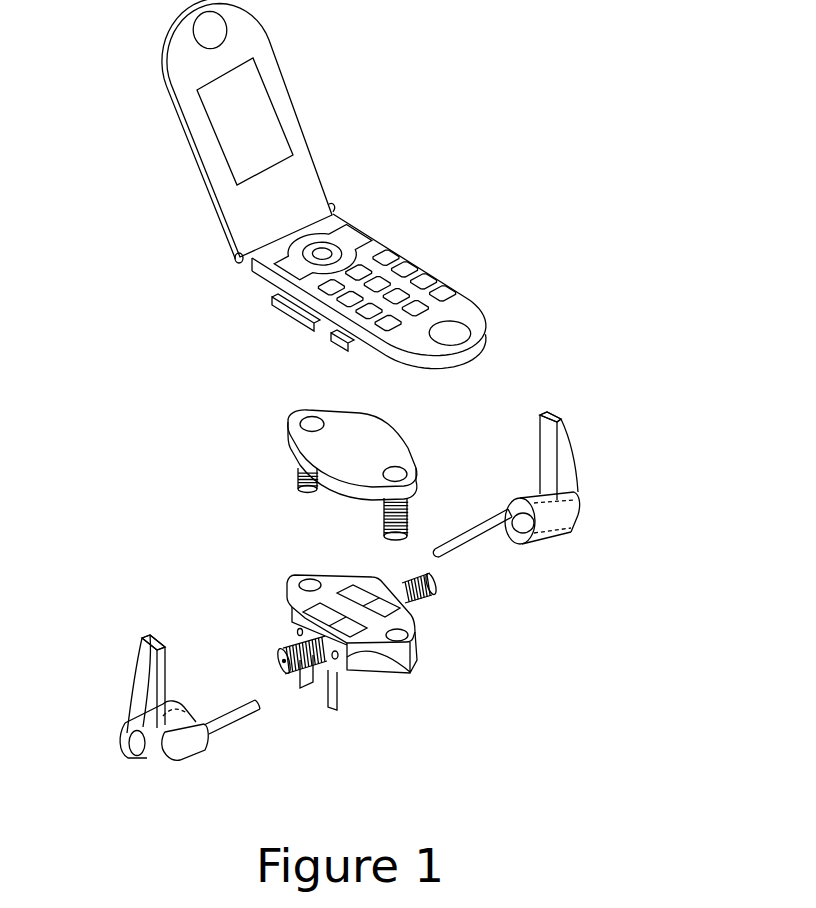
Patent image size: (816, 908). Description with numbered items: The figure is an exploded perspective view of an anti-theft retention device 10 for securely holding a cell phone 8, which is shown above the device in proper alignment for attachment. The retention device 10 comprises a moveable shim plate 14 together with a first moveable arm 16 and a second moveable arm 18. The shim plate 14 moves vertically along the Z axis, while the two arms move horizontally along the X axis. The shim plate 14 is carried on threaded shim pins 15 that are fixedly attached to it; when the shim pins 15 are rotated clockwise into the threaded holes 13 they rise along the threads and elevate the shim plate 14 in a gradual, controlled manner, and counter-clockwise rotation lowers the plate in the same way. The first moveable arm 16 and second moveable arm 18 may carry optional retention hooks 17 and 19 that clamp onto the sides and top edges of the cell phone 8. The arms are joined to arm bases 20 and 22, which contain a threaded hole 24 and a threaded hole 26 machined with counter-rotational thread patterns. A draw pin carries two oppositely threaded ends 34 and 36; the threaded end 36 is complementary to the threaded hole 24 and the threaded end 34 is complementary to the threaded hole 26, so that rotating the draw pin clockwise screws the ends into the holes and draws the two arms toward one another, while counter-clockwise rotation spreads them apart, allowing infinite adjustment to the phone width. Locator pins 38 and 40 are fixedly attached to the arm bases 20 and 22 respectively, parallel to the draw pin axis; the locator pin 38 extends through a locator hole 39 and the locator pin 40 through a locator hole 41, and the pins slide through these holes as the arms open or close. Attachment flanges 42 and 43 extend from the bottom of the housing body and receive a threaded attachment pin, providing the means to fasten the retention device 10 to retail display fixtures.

The cell phone 8 is at (197, 120).
The retention device 10 is at (552, 673).
The threaded holes 13 is at (309, 583).
The shim plate 14 is at (333, 420).
The shim pins 15 is at (300, 490).
The first moveable arm 16 is at (138, 695).
The retention hook 17 is at (165, 640).
The second moveable arm 18 is at (570, 453).
The retention hook 19 is at (543, 426).
The arm base 20 is at (133, 757).
The arm base 22 is at (560, 537).
The threaded hole 24 is at (160, 755).
The threaded hole 26 is at (578, 512).
The threaded end 34 is at (403, 583).
The threaded end 36 is at (266, 674).
The locator pin 38 is at (243, 717).
The locator hole 39 is at (393, 677).
The locator pin 40 is at (463, 540).
The locator hole 41 is at (293, 640).
The attachment flange 42 is at (370, 680).
The attachment flange 43 is at (315, 673).